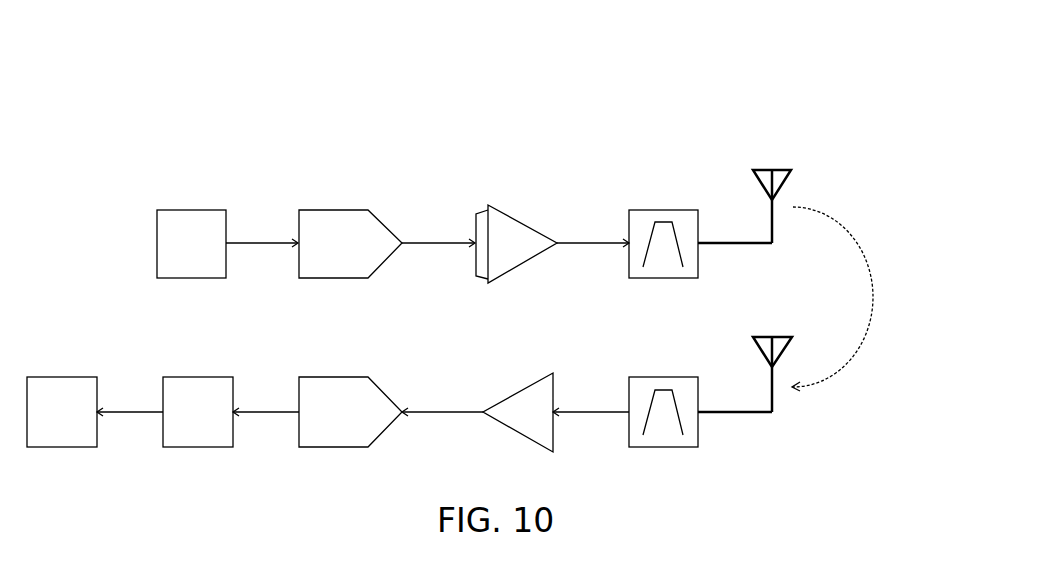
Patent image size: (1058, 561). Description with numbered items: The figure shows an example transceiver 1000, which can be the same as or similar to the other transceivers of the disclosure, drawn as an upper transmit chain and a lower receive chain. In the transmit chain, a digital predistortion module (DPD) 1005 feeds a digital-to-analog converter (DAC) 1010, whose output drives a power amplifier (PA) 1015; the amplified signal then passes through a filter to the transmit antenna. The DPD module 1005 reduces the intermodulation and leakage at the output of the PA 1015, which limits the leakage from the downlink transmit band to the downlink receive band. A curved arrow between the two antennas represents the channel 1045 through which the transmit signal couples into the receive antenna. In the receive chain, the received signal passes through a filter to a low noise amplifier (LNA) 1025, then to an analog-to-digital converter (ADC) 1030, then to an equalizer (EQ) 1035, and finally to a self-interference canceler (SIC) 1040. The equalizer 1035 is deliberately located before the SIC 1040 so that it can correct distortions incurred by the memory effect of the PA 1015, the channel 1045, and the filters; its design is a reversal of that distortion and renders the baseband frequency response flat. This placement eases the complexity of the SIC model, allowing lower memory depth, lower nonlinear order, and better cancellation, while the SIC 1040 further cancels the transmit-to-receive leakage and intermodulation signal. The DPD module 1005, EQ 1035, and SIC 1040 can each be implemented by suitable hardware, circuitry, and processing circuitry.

The transceiver 1000 is at (815, 77).
The digital predistortion module 1005 is at (172, 210).
The digital-to-analog converter 1010 is at (332, 210).
The power amplifier 1015 is at (485, 204).
The low noise amplifier 1025 is at (556, 378).
The analog-to-digital converter 1030 is at (355, 377).
The equalizer 1035 is at (215, 377).
The self-interference canceler 1040 is at (85, 377).
The channel 1045 is at (870, 297).